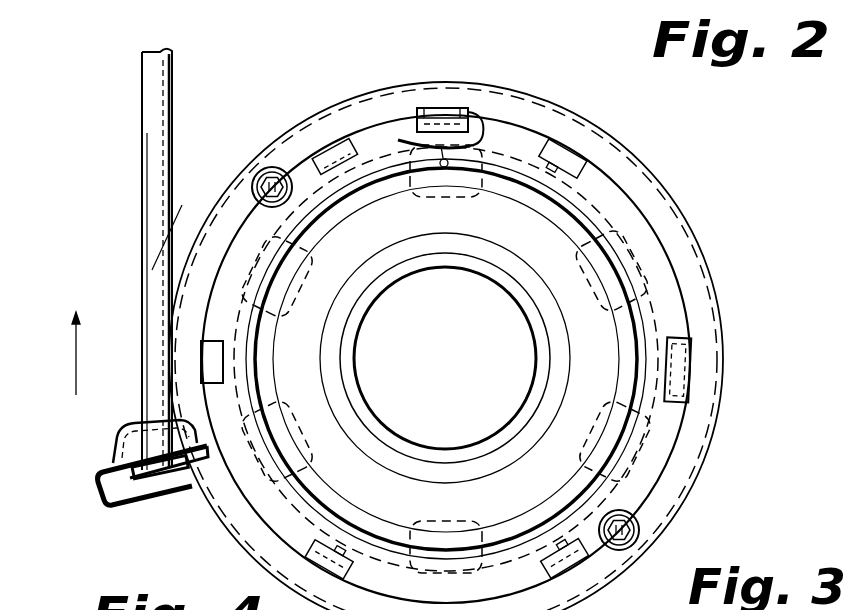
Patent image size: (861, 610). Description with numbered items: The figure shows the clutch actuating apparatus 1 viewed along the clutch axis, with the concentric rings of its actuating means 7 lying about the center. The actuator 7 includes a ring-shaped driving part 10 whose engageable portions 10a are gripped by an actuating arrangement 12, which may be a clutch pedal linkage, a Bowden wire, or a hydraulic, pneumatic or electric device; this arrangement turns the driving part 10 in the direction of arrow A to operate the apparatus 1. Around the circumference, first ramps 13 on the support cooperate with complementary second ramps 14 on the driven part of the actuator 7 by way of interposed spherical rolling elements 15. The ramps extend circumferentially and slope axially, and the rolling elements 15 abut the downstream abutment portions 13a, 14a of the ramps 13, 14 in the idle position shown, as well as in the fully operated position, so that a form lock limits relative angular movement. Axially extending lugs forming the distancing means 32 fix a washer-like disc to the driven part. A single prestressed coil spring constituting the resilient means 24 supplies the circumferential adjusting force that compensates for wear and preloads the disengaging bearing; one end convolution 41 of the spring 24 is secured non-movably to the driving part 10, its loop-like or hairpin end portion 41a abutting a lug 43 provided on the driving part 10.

The apparatus 1 is at (80, 269).
The actuating means 7 is at (231, 538).
The driving part 10 is at (210, 449).
The engageable portions 10a is at (120, 450).
The actuating arrangement 12 is at (152, 105).
The first ramps 13 is at (603, 153).
The downstream portions 13a is at (558, 130).
The second ramps 14 is at (680, 260).
The downstream portions 14a is at (632, 163).
The rolling elements 15 is at (660, 193).
The resilient means 24 is at (512, 175).
The distancing means 32 is at (313, 144).
The end convolution 41 is at (490, 150).
The end portion 41a is at (472, 114).
The lug 43 is at (423, 107).